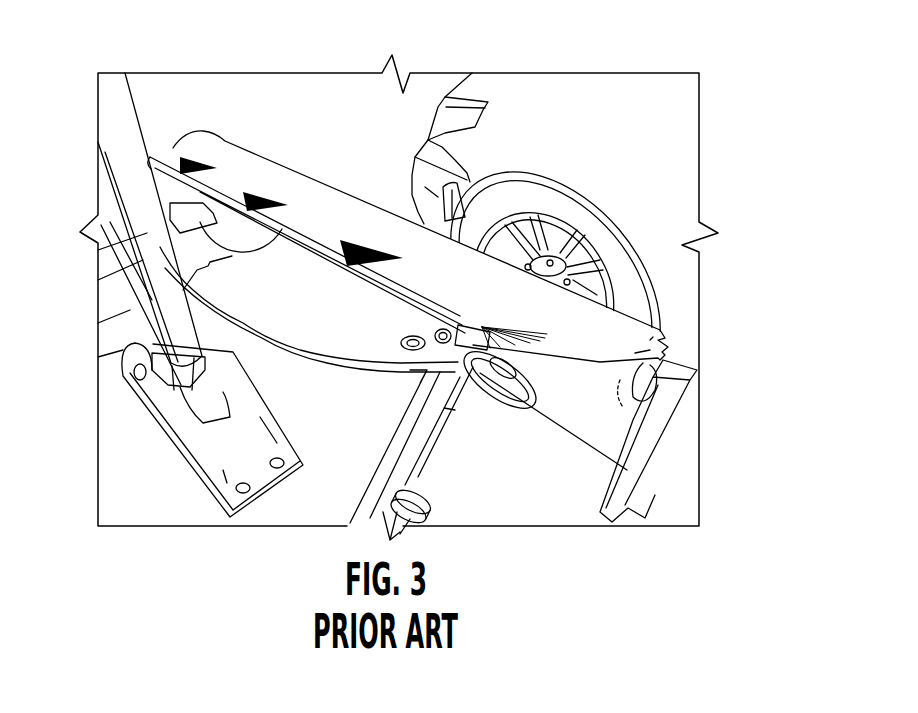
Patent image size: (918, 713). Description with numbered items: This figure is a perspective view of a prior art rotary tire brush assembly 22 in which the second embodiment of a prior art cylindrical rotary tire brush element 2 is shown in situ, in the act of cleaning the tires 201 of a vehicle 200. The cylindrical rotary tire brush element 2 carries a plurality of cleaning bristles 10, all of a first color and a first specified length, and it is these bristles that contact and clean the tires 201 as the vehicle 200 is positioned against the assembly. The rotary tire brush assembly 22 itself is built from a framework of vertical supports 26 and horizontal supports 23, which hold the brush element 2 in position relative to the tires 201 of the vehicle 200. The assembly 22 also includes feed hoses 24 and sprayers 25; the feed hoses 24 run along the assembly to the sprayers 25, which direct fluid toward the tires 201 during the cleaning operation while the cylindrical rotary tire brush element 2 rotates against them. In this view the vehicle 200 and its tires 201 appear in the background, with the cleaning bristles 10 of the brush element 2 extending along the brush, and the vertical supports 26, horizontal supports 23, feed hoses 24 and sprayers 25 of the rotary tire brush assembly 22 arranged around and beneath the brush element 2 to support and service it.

The second embodiment of prior art cylindrical rotary tire brush element 2 is at (228, 163).
The cleaning bristles 10 is at (340, 213).
The rotary tire brush assembly 22 is at (690, 435).
The horizontal supports 23 is at (143, 277).
The feed hoses 24 is at (128, 202).
The sprayers 25 is at (640, 373).
The vertical supports 26 is at (407, 437).
The vehicle 200 is at (662, 146).
The tires 201 is at (615, 250).